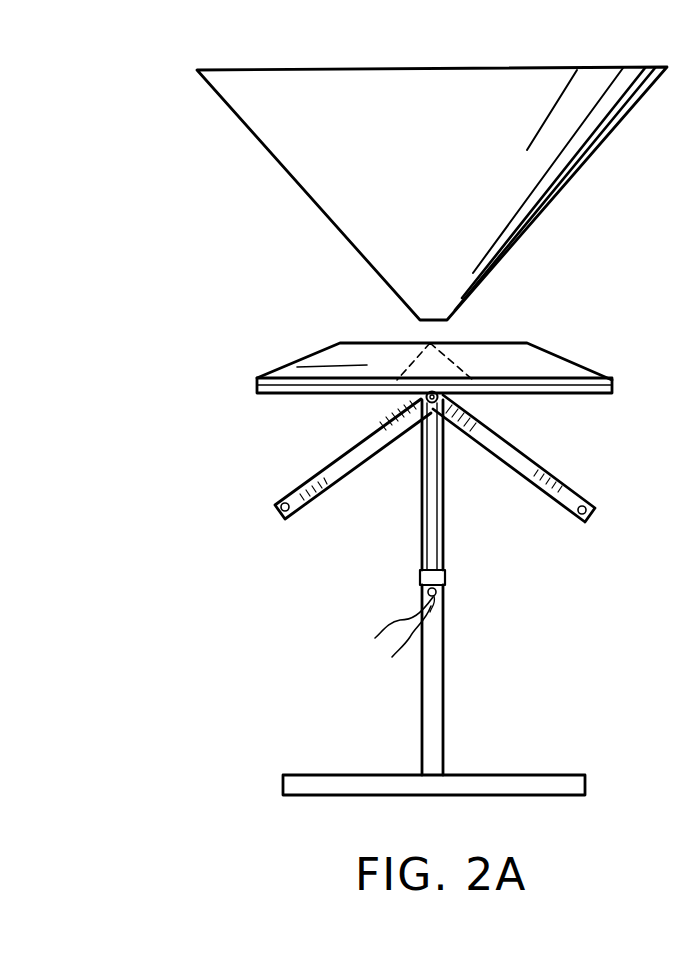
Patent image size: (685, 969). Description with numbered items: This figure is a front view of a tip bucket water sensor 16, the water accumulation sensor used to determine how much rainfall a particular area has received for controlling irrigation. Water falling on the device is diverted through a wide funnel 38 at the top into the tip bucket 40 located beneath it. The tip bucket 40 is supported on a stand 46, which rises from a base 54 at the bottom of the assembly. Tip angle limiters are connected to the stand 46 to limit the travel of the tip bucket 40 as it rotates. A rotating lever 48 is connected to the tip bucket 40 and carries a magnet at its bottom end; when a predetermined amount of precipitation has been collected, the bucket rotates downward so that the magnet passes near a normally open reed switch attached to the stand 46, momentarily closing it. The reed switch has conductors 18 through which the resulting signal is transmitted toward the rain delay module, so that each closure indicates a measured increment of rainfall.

The tip bucket 16 is at (185, 318).
The electrical conductor 18 is at (384, 612).
The funnel 38 is at (570, 183).
The tip bucket 40 is at (290, 373).
The stand 46 is at (445, 703).
The rotating lever 48 is at (443, 508).
The base 54 is at (322, 774).